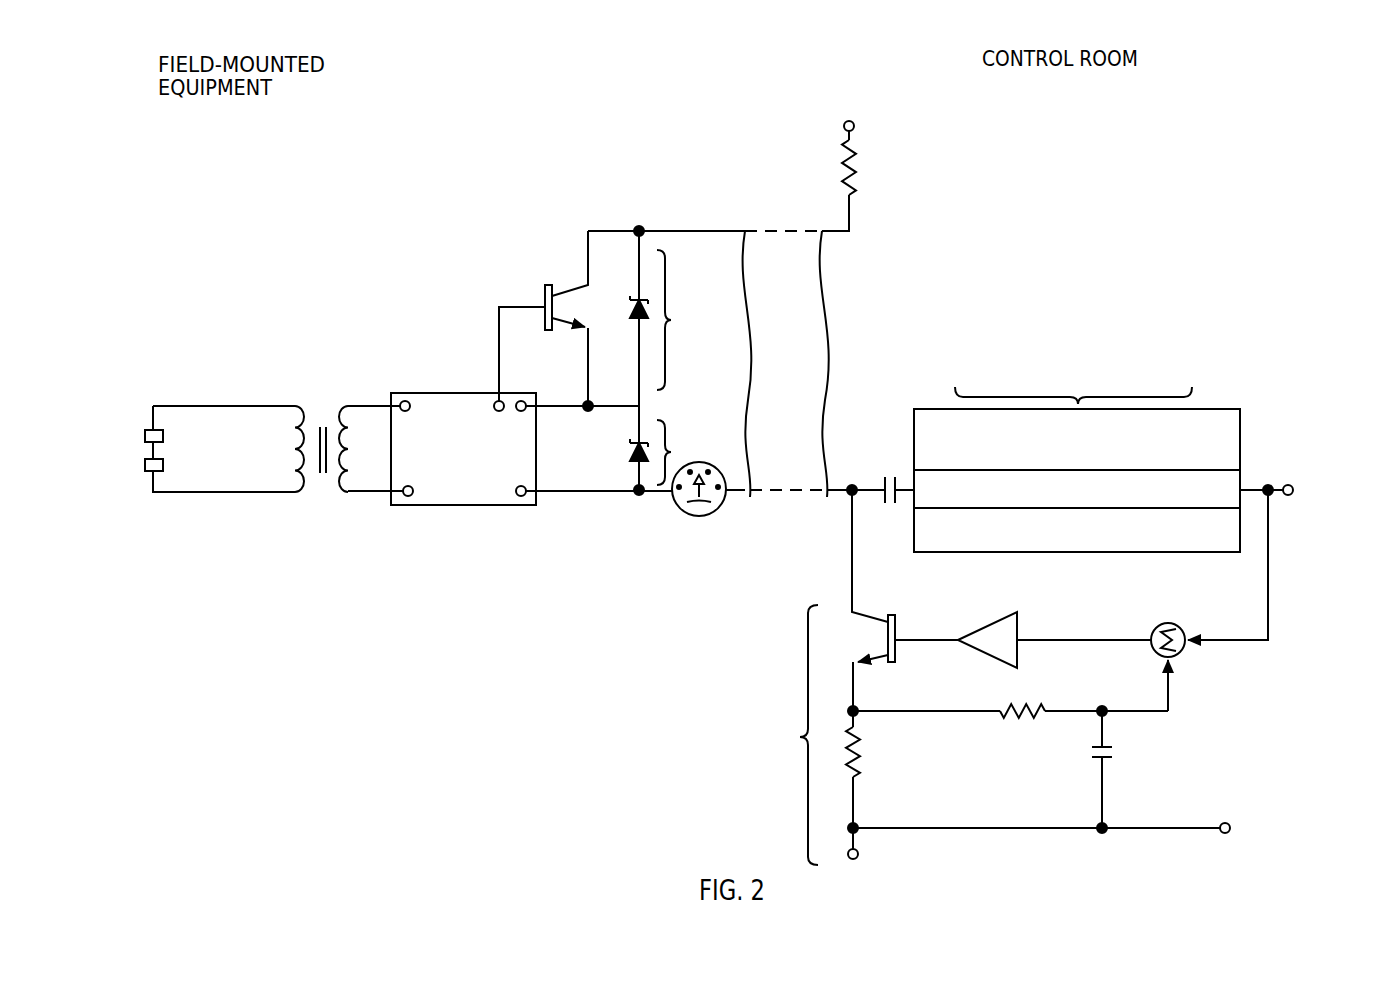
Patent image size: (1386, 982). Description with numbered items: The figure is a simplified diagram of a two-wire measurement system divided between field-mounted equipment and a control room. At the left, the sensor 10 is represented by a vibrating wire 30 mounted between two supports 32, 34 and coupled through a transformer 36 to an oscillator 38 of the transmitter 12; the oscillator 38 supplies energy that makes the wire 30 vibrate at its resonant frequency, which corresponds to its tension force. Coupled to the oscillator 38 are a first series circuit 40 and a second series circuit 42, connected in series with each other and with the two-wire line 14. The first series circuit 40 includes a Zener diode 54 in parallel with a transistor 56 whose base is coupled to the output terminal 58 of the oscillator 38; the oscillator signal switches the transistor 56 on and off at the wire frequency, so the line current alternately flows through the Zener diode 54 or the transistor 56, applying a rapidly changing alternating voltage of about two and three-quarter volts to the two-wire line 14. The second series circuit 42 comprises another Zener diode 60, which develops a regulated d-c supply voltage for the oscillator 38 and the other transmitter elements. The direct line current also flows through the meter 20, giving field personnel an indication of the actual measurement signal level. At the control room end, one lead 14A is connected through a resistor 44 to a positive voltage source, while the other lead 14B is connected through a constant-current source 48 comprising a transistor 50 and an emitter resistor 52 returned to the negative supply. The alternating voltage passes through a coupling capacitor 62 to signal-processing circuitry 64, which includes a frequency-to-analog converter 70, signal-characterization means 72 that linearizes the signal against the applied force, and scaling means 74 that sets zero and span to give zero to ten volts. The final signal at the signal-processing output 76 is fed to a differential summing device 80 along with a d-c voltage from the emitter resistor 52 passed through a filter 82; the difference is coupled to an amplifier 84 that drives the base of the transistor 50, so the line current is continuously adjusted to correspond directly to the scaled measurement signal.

The sensor 10 is at (160, 403).
The transmitter 12 is at (394, 357).
The two-wire line 14 is at (797, 345).
The lead 14A is at (771, 230).
The lead 14B is at (757, 488).
The meter 20 is at (683, 512).
The vibrating wire 30 is at (163, 455).
The support 32 is at (147, 431).
The support 34 is at (147, 461).
The transformer 36 is at (319, 415).
The oscillator 38 is at (463, 449).
The first series circuit 40 is at (647, 360).
The second series circuit 42 is at (642, 452).
The resistor 44 is at (857, 181).
The constant-current source 48 is at (828, 557).
The transistor 50 is at (899, 624).
The emitter resistor 52 is at (852, 776).
The Zener diode 54 is at (630, 309).
The transistor 56 is at (553, 309).
The output terminal 58 is at (494, 398).
The Zener diode 60 is at (631, 449).
The coupling capacitor 62 is at (888, 475).
The signal-processing circuitry 64 is at (1101, 447).
The frequency-to-analog converter 70 is at (1073, 440).
The signal-characterization means 72 is at (1077, 488).
The scaling means 74 is at (1077, 527).
The signal-processing output 76 is at (1246, 485).
The differential summing device 80 is at (1176, 624).
The filter 82 is at (1080, 769).
The amplifier 84 is at (986, 626).